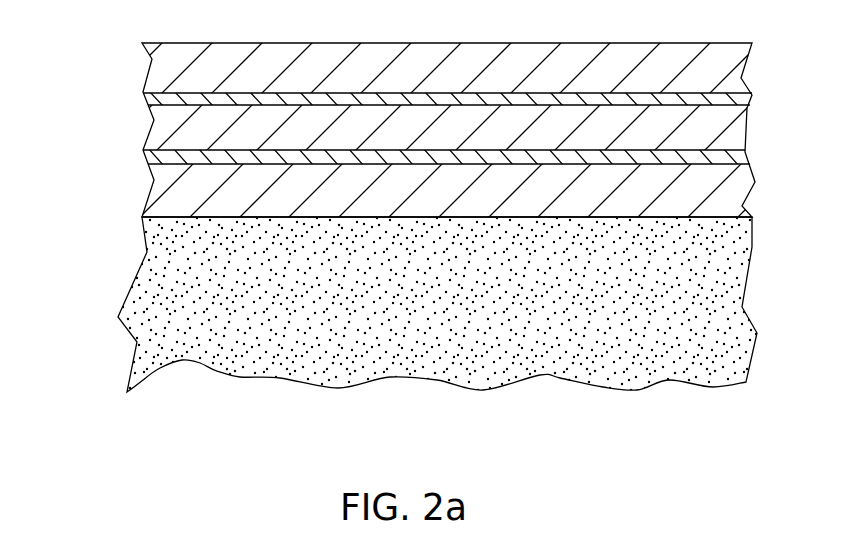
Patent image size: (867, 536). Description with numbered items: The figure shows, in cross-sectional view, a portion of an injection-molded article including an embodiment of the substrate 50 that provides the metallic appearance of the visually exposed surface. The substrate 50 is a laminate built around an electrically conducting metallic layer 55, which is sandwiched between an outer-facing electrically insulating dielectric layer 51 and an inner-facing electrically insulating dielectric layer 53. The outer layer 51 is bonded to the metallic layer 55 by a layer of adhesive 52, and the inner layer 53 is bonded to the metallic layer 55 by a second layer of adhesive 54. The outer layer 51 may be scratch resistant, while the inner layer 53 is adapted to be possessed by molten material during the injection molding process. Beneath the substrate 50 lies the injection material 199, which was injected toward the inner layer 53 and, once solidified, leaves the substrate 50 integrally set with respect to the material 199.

The substrate 50 is at (488, 127).
The outer-facing electrically insulating dielectric layer 51 is at (168, 67).
The adhesive layer 52 is at (148, 97).
The electrically conducting metallic layer 55 is at (175, 127).
The adhesive layer 54 is at (153, 159).
The inner-facing electrically insulating dielectric layer 53 is at (160, 198).
The injection material 199 is at (172, 335).